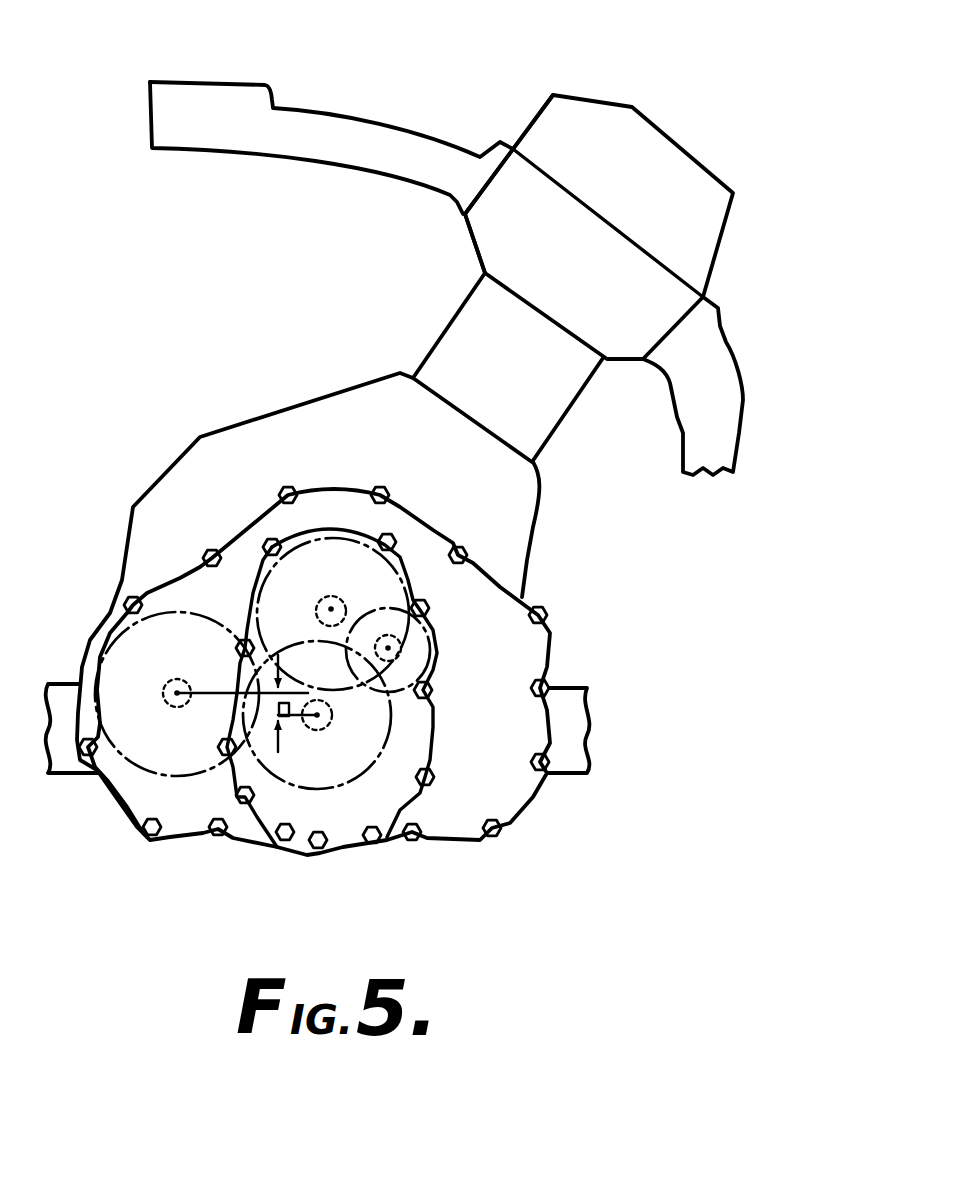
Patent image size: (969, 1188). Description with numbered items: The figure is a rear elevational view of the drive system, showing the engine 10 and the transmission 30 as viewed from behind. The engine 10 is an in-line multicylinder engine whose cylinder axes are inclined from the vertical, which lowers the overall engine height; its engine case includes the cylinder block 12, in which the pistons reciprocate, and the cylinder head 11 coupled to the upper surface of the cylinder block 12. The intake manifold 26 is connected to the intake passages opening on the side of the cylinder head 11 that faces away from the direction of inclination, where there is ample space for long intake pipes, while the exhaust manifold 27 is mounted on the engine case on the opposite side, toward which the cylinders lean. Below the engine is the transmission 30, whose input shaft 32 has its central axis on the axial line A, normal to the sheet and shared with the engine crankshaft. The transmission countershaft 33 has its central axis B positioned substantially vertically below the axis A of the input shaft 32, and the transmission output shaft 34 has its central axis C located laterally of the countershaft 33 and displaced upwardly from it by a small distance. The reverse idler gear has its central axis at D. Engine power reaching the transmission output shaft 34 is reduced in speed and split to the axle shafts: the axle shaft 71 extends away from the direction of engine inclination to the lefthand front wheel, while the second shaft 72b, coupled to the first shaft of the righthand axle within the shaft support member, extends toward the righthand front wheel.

The engine 10 is at (547, 87).
The cylinder head 11 is at (490, 232).
The cylinder block 12 is at (543, 418).
The intake manifold 26 is at (360, 112).
The exhaust manifold 27 is at (743, 372).
The transmission 30 is at (163, 571).
The input shaft 32 is at (316, 600).
The transmission countershaft 33 is at (343, 777).
The transmission output shaft 34 is at (243, 648).
The axle shaft 71 is at (63, 697).
The second shaft 72b is at (568, 698).
The axial line A is at (332, 609).
The central axis B is at (317, 717).
The central axis C is at (177, 695).
The central axis D is at (390, 650).